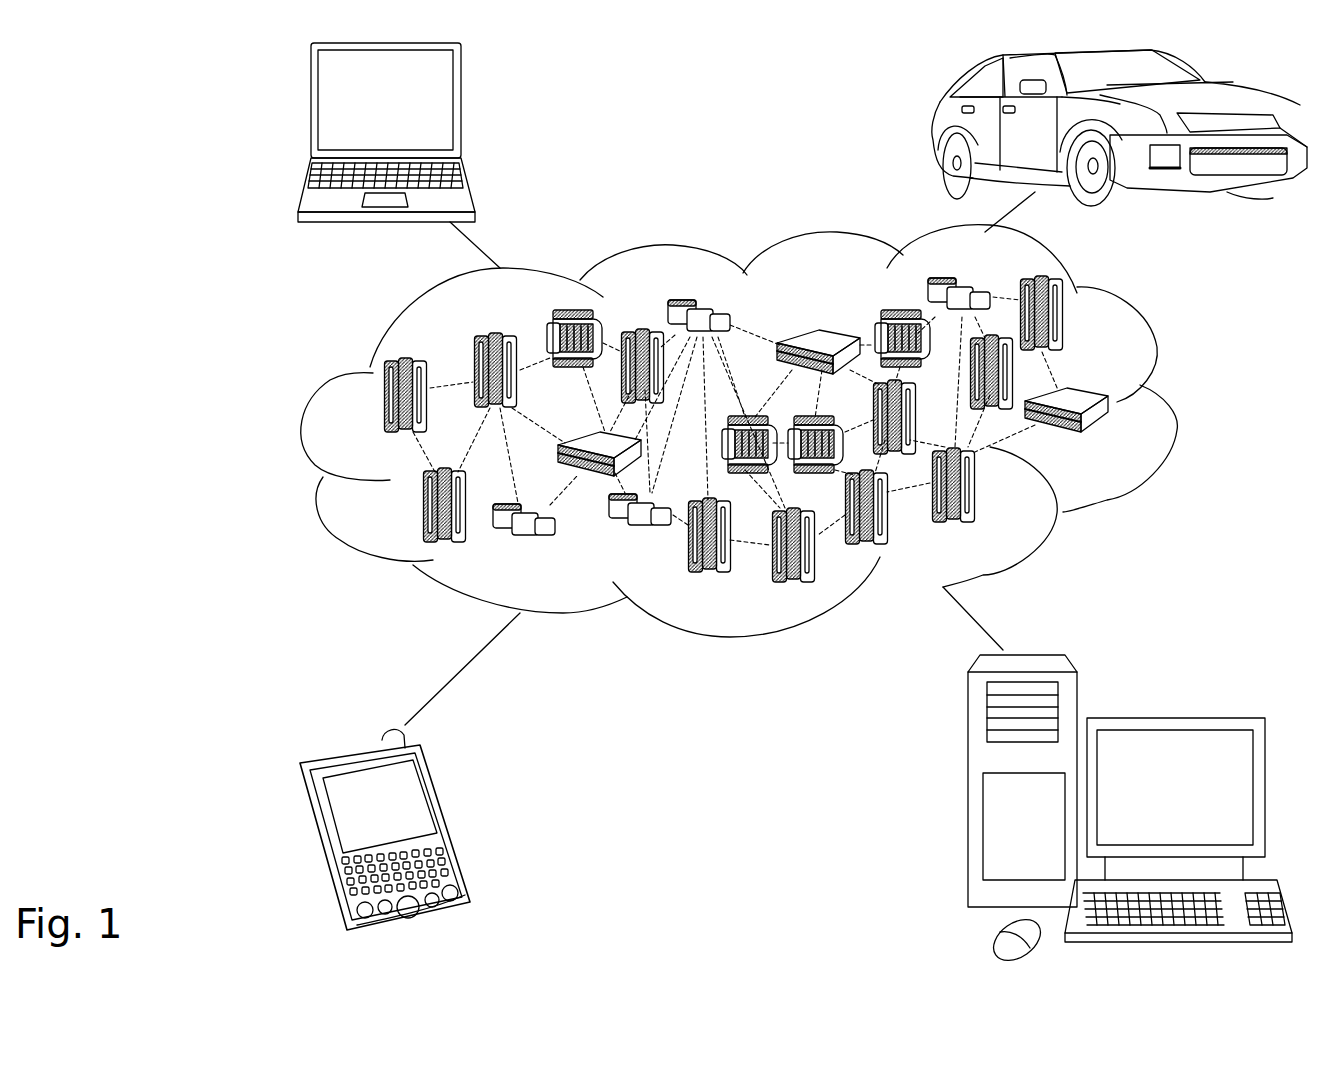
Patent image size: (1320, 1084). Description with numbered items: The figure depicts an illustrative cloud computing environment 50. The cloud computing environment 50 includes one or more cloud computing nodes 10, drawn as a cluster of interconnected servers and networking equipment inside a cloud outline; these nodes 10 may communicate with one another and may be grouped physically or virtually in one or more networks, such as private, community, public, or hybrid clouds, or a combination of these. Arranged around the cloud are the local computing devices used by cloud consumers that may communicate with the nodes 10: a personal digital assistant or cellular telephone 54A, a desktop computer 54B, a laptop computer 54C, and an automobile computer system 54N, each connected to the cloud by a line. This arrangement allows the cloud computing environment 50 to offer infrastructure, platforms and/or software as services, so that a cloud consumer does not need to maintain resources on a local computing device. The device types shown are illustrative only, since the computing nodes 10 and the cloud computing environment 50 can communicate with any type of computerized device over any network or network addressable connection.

The cloud computing nodes 10 is at (1112, 441).
The cloud computing environment 50 is at (1170, 407).
The personal digital assistant or cellular telephone 54A is at (447, 823).
The desktop computer 54B is at (1170, 715).
The laptop computer 54C is at (462, 113).
The automobile computer system 54N is at (932, 130).